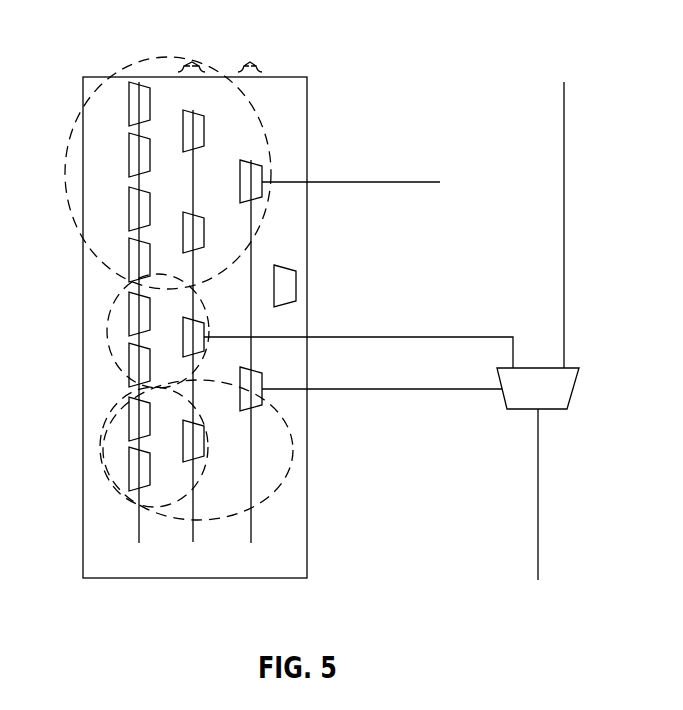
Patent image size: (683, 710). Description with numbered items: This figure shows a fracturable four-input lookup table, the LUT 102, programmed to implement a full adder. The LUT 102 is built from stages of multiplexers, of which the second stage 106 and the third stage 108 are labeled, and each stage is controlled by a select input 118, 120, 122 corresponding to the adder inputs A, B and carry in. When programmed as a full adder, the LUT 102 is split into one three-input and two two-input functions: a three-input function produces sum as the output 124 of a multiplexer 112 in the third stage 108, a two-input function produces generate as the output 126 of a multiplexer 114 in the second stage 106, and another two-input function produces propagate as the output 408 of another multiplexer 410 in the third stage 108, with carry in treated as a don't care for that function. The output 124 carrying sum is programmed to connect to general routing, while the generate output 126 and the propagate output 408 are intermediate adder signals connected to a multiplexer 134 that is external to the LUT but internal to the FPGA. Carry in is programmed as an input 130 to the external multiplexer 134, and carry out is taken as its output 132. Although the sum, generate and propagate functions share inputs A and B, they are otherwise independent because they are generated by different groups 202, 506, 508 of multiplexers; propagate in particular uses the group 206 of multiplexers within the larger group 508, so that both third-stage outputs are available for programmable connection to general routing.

The 4-LUT 102 is at (308, 102).
The second stage 106 is at (195, 243).
The third stage 108 is at (263, 165).
The multiplexer 112 is at (249, 160).
The multiplexer 114 is at (204, 319).
The select input 118 is at (139, 543).
The select input 120 is at (193, 542).
The select input 122 is at (251, 543).
The output 124 is at (397, 183).
The output 126 is at (418, 338).
The input 130 is at (566, 110).
The output 132 is at (540, 553).
The multiplexer 134 is at (574, 393).
The group of multiplexers 202 is at (132, 63).
The group of multiplexers 206 is at (101, 446).
The output 408 is at (415, 390).
The multiplexer 410 is at (250, 411).
The group of multiplexers 506 is at (108, 358).
The group of multiplexers 508 is at (112, 482).